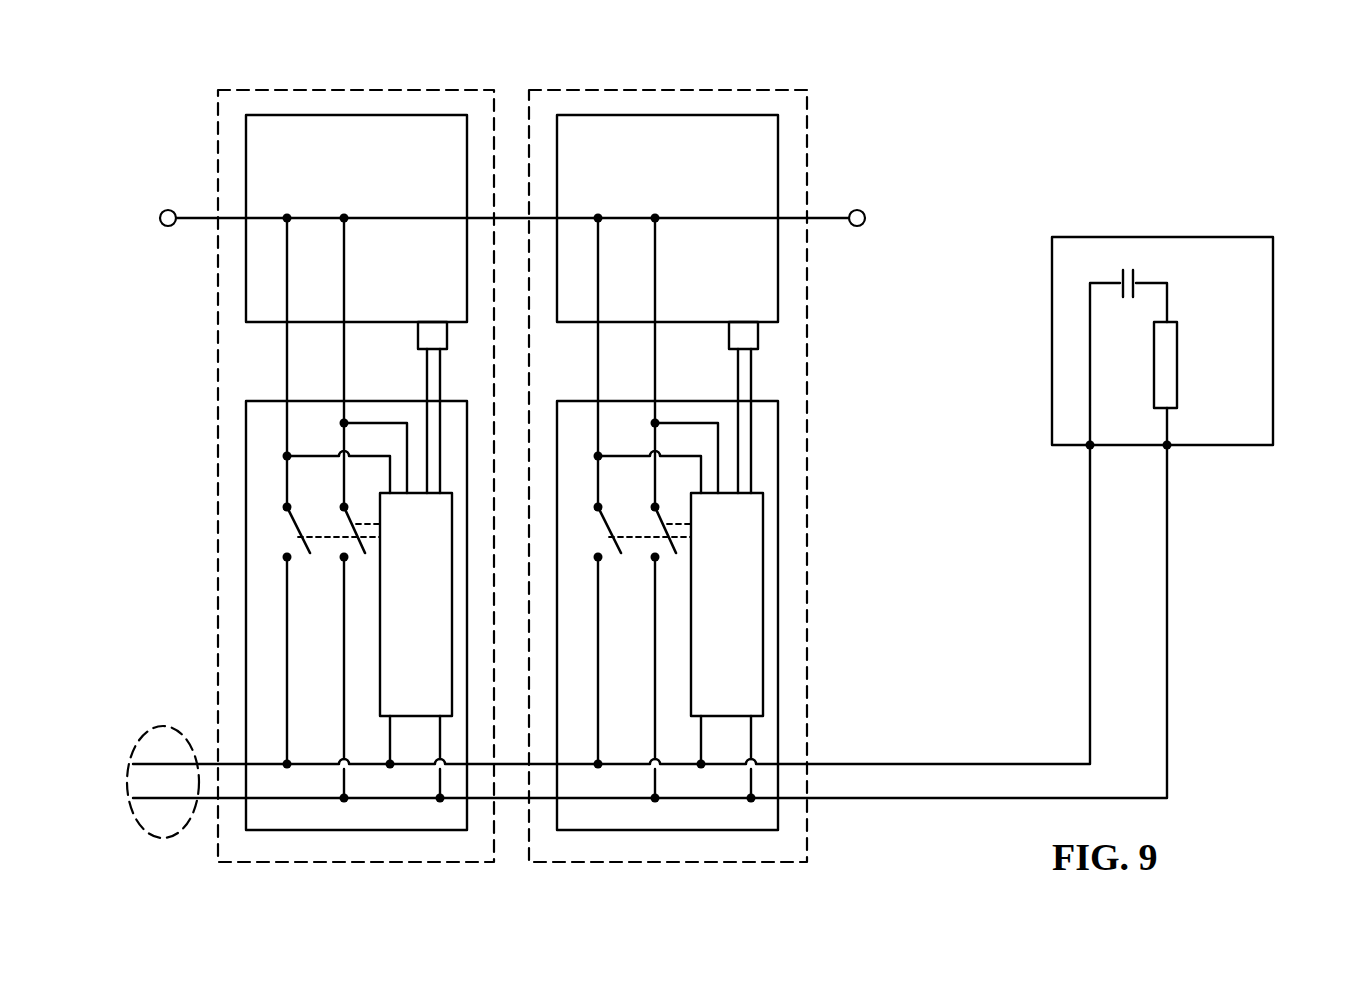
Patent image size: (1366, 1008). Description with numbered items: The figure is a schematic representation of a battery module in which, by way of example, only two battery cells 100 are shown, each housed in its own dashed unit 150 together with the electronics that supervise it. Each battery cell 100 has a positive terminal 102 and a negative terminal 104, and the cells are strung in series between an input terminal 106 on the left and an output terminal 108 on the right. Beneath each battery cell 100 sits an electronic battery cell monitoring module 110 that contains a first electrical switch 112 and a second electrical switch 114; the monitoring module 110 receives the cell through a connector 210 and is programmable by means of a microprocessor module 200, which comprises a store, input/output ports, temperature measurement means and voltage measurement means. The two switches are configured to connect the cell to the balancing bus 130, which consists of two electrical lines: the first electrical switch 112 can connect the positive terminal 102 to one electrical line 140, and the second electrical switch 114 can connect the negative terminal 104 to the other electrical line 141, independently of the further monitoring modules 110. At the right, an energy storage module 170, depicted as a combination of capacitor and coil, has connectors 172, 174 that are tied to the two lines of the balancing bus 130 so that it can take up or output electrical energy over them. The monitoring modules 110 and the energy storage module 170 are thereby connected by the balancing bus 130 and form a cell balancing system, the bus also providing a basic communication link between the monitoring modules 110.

The battery cell 100 is at (403, 128).
The positive terminal 102 is at (287, 216).
The negative terminal 104 is at (344, 216).
The input terminal 106 is at (162, 211).
The output terminal 108 is at (864, 210).
The electronic battery cell monitoring module 110 is at (368, 818).
The first electrical switch 112 is at (294, 521).
The second electrical switch 114 is at (352, 540).
The balancing bus 130 is at (145, 830).
The electrical line 140 is at (983, 764).
The other electrical line 141 is at (948, 798).
The module 150 is at (245, 102).
The energy storage module 170 is at (1243, 248).
The connector 172 is at (1087, 447).
The connector 174 is at (1170, 447).
The microprocessor module 200 is at (436, 590).
The connector 210 is at (425, 322).